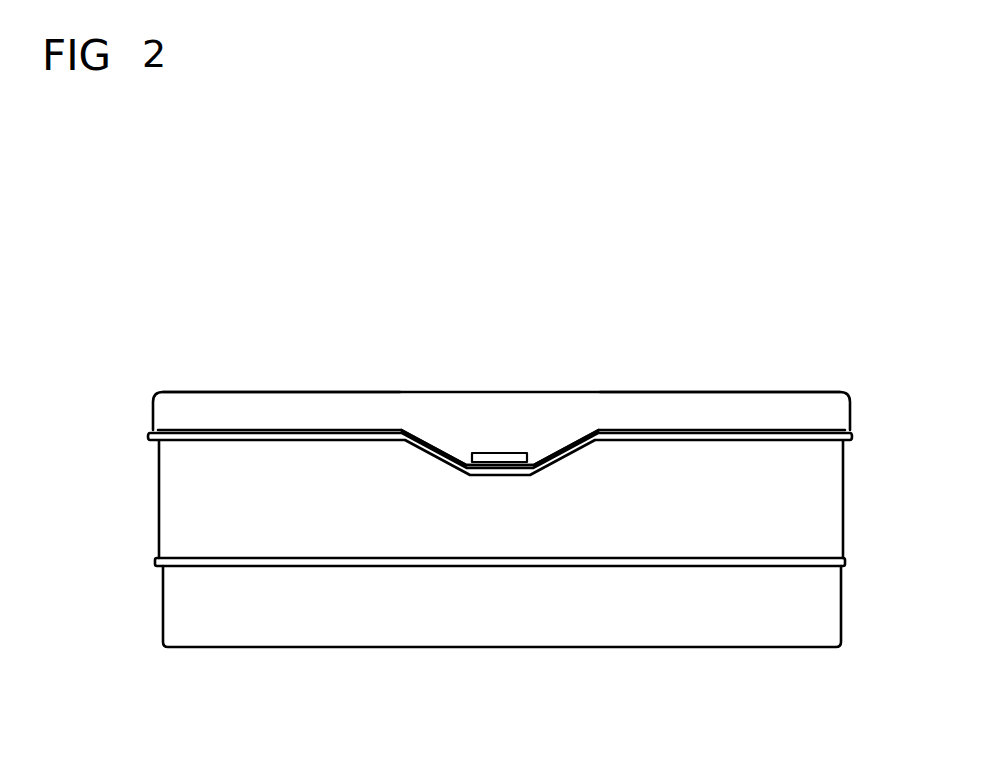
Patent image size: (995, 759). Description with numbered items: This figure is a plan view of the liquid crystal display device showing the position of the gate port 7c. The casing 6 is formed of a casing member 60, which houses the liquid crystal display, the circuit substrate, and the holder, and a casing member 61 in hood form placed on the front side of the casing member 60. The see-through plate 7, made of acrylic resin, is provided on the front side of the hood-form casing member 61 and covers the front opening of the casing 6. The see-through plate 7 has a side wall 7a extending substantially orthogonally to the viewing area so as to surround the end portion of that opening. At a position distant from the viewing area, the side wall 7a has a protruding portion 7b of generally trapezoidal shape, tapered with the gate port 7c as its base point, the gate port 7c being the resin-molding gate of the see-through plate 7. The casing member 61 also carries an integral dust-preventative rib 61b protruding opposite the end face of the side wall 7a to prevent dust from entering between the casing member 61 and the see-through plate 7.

The casing 6 is at (500, 527).
The casing member 60 is at (409, 597).
The casing member in hood form 61 is at (313, 517).
The dust-preventative rib 61b is at (250, 437).
The see-through plate 7 is at (501, 389).
The side wall 7a is at (325, 410).
The protruding portion 7b is at (458, 448).
The gate port 7c is at (502, 457).